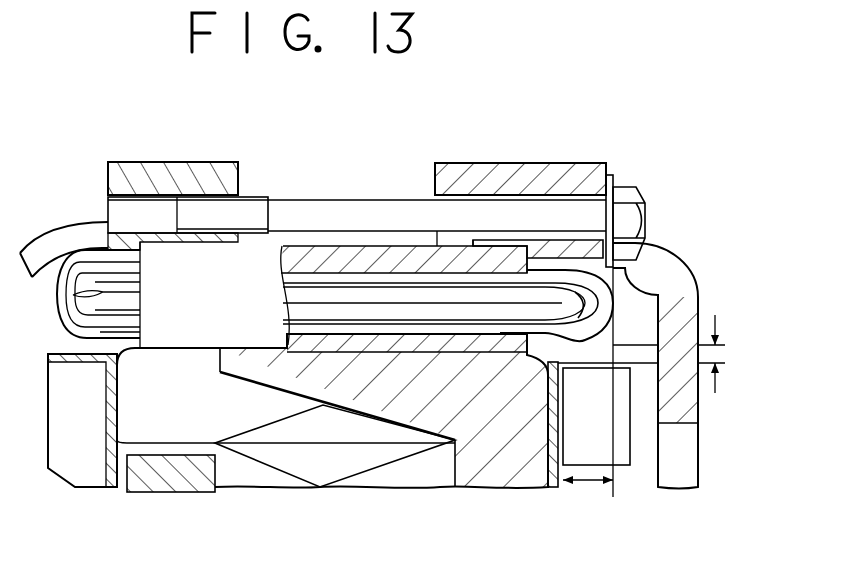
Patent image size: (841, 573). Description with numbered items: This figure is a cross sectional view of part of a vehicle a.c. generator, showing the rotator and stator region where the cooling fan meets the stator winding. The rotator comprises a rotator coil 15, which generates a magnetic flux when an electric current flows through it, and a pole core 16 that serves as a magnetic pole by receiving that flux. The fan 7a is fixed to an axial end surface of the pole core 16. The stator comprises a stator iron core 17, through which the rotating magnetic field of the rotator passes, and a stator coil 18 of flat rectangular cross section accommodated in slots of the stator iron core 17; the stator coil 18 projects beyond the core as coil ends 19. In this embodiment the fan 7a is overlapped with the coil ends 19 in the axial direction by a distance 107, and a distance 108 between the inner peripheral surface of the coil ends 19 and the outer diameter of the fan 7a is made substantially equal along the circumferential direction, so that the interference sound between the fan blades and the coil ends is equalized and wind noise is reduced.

The rotator coil 15 is at (337, 462).
The pole core 16 is at (497, 413).
The stator iron core 17 is at (357, 257).
The stator coil 18 is at (459, 277).
The coil ends 19 is at (612, 292).
The fan 7a is at (623, 435).
The distance 107 is at (588, 494).
The distance 108 is at (735, 354).